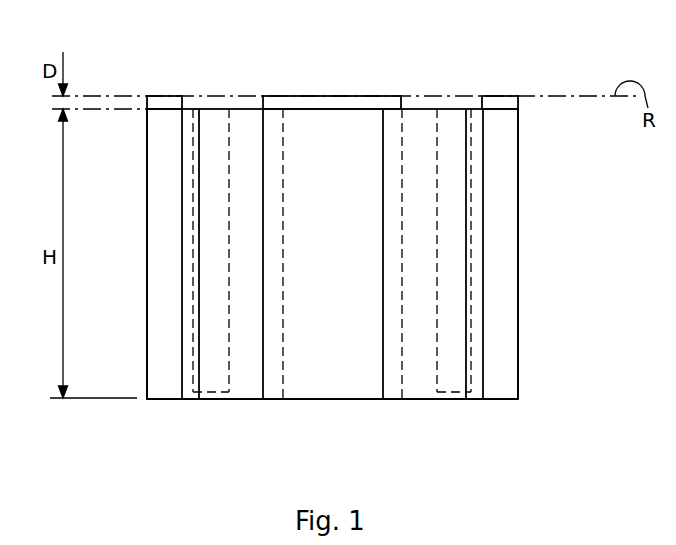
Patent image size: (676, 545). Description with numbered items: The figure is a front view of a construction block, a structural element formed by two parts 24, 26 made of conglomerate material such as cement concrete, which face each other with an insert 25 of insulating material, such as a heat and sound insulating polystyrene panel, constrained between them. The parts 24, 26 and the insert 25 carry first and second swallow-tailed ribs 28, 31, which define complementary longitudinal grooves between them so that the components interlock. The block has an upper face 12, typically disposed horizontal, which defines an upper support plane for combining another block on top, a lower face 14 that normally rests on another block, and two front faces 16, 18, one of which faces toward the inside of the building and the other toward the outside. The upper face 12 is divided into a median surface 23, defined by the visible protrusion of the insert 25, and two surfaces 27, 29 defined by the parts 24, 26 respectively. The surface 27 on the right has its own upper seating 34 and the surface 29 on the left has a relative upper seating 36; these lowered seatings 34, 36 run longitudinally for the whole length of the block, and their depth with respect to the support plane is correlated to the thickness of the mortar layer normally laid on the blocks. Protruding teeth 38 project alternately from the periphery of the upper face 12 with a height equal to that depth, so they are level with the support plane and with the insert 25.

The upper face 12 is at (353, 78).
The lower face 14 is at (505, 400).
The front face 16 is at (147, 232).
The front face 18 is at (518, 247).
The surface 23 is at (318, 95).
The part 24 is at (458, 401).
The insert 25 is at (323, 401).
The part 26 is at (176, 401).
The surface 27 is at (428, 90).
The first swallow-tailed rib 28 is at (388, 380).
The surface 29 is at (232, 88).
The second swallow-tailed rib 31 is at (272, 380).
The upper seating 34 is at (470, 108).
The upper seating 36 is at (190, 108).
The protruding teeth 38 is at (162, 102).